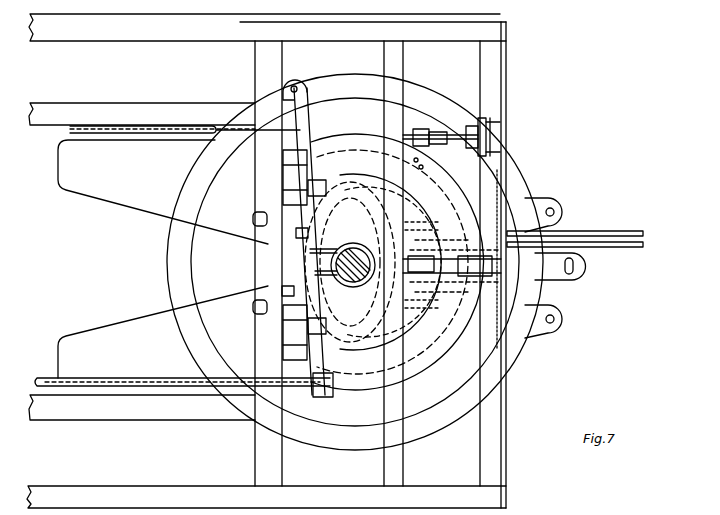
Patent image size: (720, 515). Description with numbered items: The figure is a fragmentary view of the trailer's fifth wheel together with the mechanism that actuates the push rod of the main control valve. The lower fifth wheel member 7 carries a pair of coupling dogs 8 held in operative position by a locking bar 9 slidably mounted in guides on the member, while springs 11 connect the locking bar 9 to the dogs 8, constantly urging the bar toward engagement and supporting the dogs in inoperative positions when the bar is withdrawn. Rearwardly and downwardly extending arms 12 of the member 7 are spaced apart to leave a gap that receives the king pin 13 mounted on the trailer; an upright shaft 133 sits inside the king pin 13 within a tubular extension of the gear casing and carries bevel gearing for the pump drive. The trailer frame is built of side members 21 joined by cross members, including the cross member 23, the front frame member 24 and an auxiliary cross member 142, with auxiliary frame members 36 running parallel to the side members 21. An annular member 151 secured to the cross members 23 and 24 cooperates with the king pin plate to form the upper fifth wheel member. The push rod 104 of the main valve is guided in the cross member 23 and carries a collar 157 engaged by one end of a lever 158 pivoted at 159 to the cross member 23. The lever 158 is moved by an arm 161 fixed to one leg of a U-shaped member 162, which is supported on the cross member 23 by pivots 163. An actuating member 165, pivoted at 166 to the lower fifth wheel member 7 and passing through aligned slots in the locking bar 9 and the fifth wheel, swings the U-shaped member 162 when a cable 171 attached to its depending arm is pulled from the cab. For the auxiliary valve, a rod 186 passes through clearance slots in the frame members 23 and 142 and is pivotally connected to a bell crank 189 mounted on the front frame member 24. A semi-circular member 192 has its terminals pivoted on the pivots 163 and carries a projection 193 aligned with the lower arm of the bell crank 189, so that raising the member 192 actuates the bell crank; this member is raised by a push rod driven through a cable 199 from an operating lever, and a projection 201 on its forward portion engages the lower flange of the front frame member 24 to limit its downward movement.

The lower fifth wheel member 7 is at (426, 405).
The coupling dogs 8 is at (305, 234).
The locking bar 9 is at (576, 276).
The springs 11 is at (437, 192).
The arms 12 is at (60, 178).
The king pin 13 is at (324, 278).
The side members 21 is at (153, 40).
The cross member 23 is at (262, 67).
The front frame member 24 is at (496, 477).
The auxiliary frame members 36 is at (63, 107).
The push rod 104 is at (42, 378).
The upright shaft 133 is at (338, 262).
The auxiliary cross member 142 is at (393, 483).
The annular member 151 is at (512, 362).
The collar 157 is at (315, 392).
The lever 158 is at (306, 128).
The pivot 159 is at (300, 80).
The arm 161 is at (322, 182).
The U-shaped member 162 is at (432, 220).
The pivots 163 is at (300, 190).
The actuating member 165 is at (410, 262).
The pivot 166 is at (378, 306).
The cable 171 is at (625, 247).
The rod 186 is at (172, 132).
The bell crank 189 is at (458, 135).
The semi-circular member 192 is at (420, 360).
The projection 193 is at (420, 128).
The cable 199 is at (632, 232).
The projection 201 is at (505, 272).